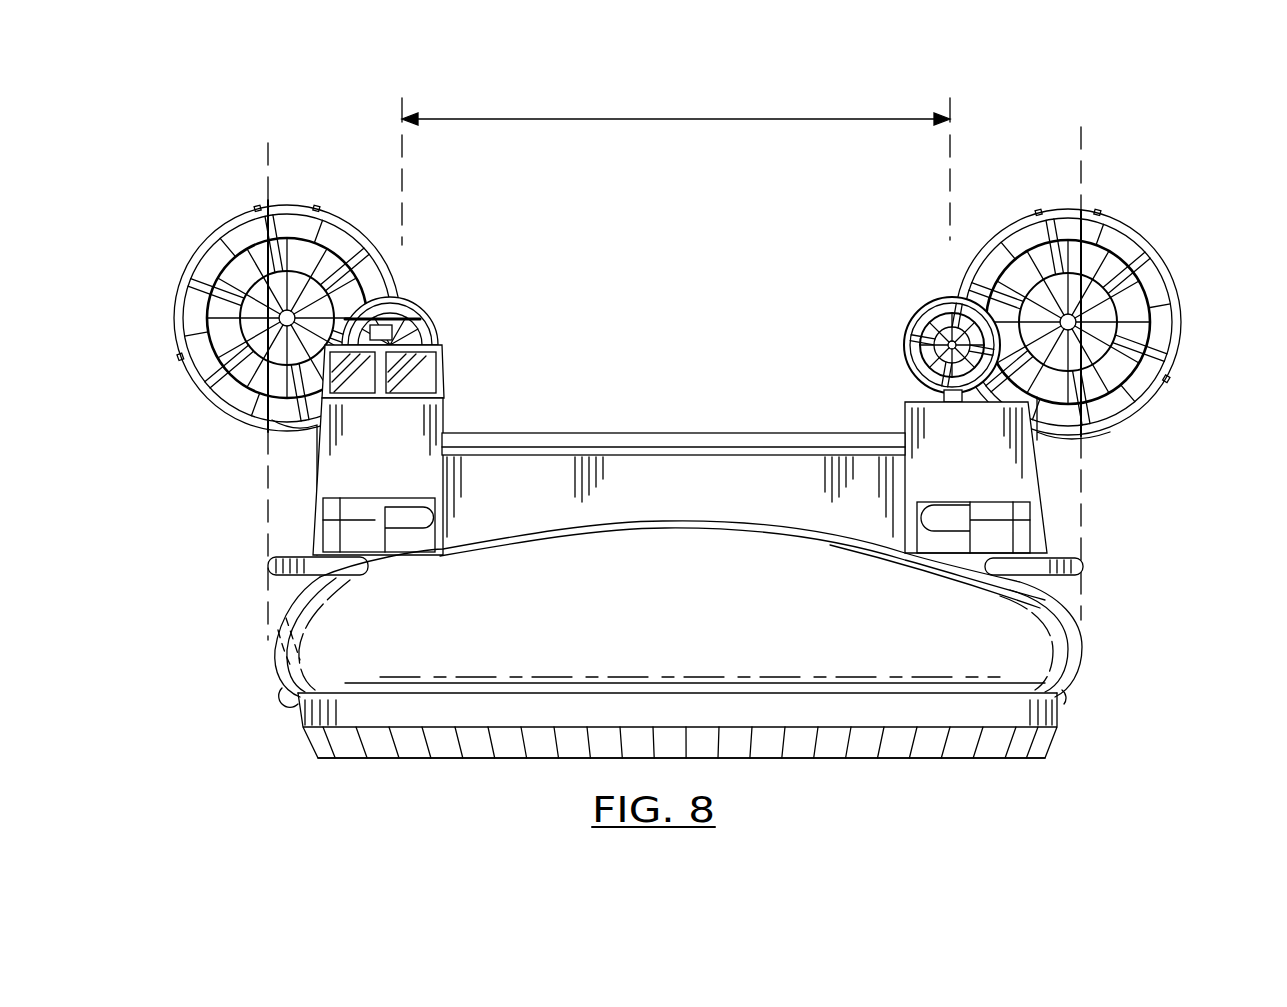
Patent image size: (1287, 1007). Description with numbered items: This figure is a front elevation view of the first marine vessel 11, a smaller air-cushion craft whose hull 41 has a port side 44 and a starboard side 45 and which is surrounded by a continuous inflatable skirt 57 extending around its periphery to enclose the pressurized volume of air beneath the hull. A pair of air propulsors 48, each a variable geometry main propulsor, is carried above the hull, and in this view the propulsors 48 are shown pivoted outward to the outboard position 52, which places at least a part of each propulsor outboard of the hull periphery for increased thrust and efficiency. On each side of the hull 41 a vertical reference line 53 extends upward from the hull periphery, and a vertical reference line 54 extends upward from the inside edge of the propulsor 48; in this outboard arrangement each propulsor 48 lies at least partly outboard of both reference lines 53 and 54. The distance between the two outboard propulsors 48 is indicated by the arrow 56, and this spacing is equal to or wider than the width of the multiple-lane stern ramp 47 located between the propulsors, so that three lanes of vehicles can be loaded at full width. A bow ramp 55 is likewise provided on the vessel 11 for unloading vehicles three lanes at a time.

The first marine vessel 11 is at (1103, 100).
The hull 41 is at (308, 585).
The port side 44 is at (1115, 674).
The starboard side 45 is at (242, 672).
The stern ramp 47 is at (560, 431).
The air propulsors 48 is at (178, 270).
The outboard position 52 is at (205, 458).
The vertical reference line 53 is at (262, 161).
The vertical reference line 54 is at (408, 197).
The bow ramp 55 is at (692, 500).
The arrow 56 is at (610, 118).
The inflatable skirt 57 is at (318, 759).